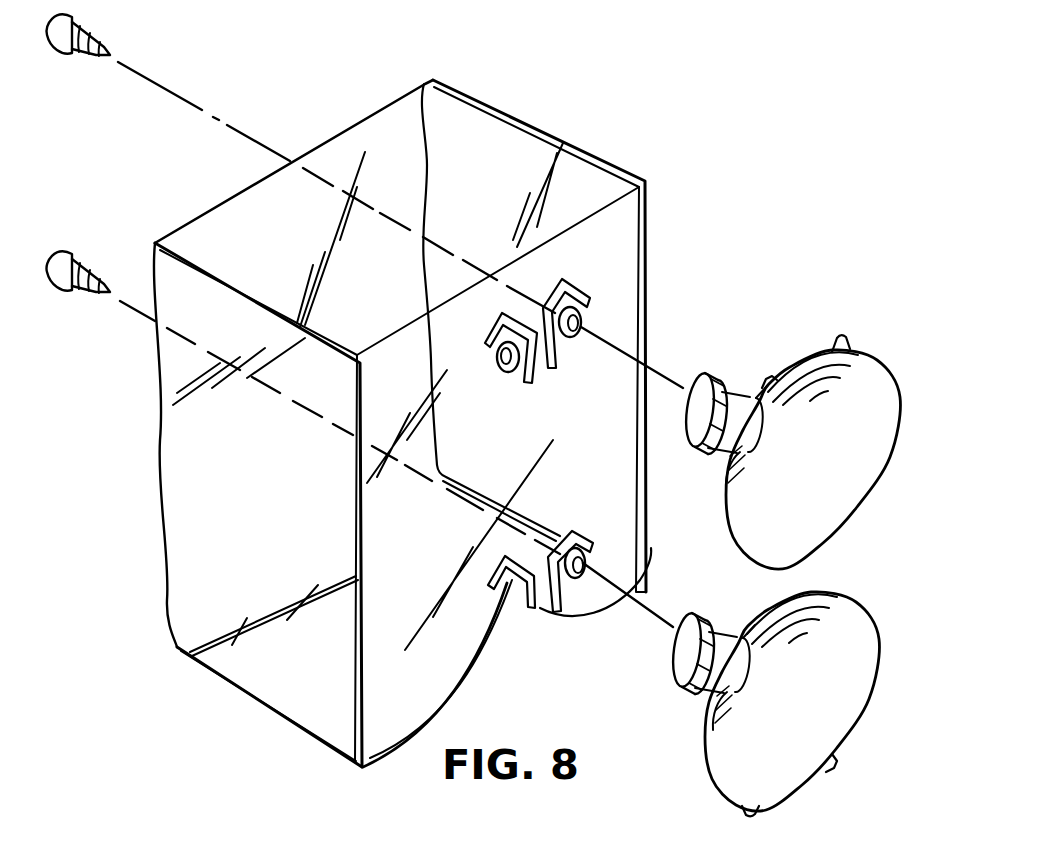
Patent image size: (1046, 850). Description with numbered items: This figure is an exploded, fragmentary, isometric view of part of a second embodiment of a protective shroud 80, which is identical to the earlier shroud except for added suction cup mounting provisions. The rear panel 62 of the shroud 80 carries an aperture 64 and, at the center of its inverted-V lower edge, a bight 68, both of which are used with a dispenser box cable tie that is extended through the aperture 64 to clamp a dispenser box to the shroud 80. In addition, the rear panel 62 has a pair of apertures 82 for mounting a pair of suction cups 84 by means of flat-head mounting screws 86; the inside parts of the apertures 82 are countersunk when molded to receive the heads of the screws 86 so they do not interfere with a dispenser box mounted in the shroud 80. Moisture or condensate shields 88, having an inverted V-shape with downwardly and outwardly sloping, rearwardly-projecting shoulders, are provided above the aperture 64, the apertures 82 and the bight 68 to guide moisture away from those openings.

The rear panel 62 is at (383, 527).
The aperture 64 is at (507, 373).
The bight 68 is at (508, 587).
The protective shroud 80 is at (400, 397).
The apertures 82 is at (580, 324).
The suction cups 84 is at (847, 513).
The flat-head mounting screws 86 is at (77, 253).
The moisture or condensate shields 88 is at (556, 310).